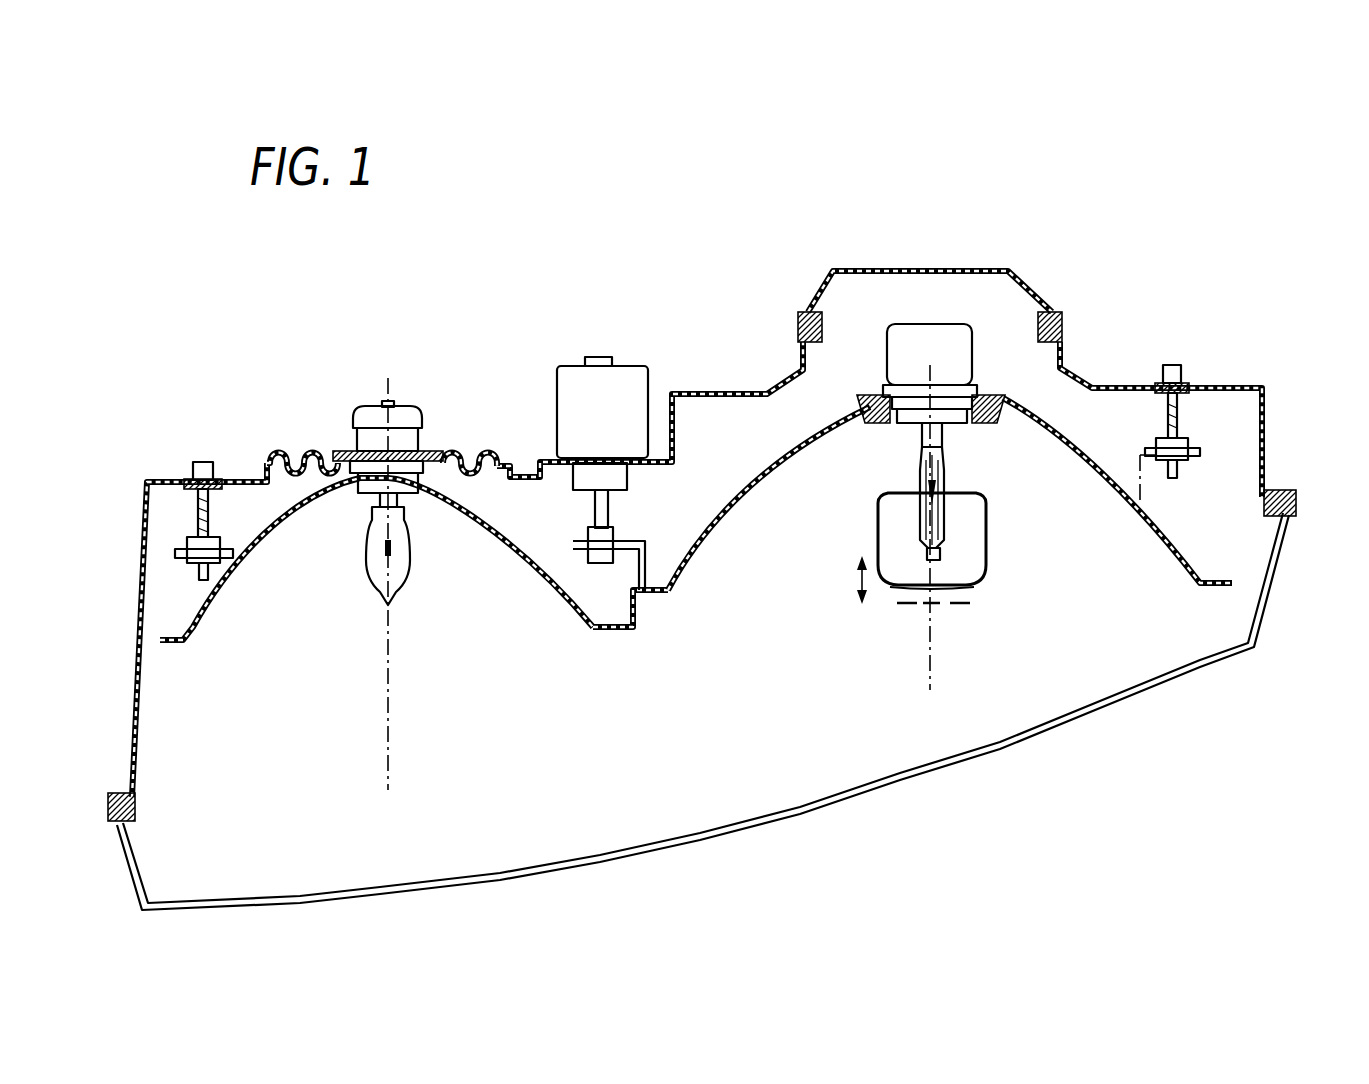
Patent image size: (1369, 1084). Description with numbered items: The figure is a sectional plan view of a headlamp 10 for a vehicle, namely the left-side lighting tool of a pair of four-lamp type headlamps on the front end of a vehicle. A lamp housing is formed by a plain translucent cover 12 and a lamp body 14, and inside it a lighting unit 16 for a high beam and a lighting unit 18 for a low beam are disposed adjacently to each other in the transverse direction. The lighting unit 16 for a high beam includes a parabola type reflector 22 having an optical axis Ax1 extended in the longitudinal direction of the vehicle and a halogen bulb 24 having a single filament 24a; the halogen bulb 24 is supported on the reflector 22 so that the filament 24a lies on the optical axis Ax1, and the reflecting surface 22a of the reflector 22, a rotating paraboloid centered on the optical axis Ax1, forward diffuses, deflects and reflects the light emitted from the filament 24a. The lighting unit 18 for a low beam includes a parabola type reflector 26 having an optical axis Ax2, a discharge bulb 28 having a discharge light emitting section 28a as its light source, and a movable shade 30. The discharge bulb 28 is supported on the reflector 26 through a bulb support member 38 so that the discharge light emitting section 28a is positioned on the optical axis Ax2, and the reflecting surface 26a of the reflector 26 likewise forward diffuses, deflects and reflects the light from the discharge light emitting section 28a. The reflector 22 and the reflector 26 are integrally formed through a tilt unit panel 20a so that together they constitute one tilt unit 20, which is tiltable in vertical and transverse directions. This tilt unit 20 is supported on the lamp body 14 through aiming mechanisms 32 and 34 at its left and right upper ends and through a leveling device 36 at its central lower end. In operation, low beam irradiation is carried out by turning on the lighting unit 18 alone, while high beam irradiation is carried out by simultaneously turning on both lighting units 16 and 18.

The headlamp 10 is at (303, 342).
The translucent cover 12 is at (787, 826).
The lamp body 14 is at (720, 386).
The lighting unit for a high beam 16 is at (376, 584).
The lighting unit for a low beam 18 is at (958, 526).
The tilt unit 20 is at (664, 659).
The tilt unit panel 20a is at (608, 636).
The reflector 22 is at (376, 533).
The reflecting surface 22a is at (252, 548).
The halogen bulb 24 is at (411, 584).
The filament 24a is at (400, 550).
The reflector 26 is at (958, 494).
The reflecting surface 26a is at (756, 490).
The discharge bulb 28 is at (985, 527).
The discharge light emitting section 28a is at (937, 500).
The movable shade 30 is at (975, 596).
The aiming mechanism 32 is at (188, 508).
The aiming mechanism 34 is at (1188, 428).
The leveling device 36 is at (570, 358).
The bulb support member 38 is at (868, 430).
The optical axis Ax1 is at (388, 735).
The optical axis Ax2 is at (930, 673).